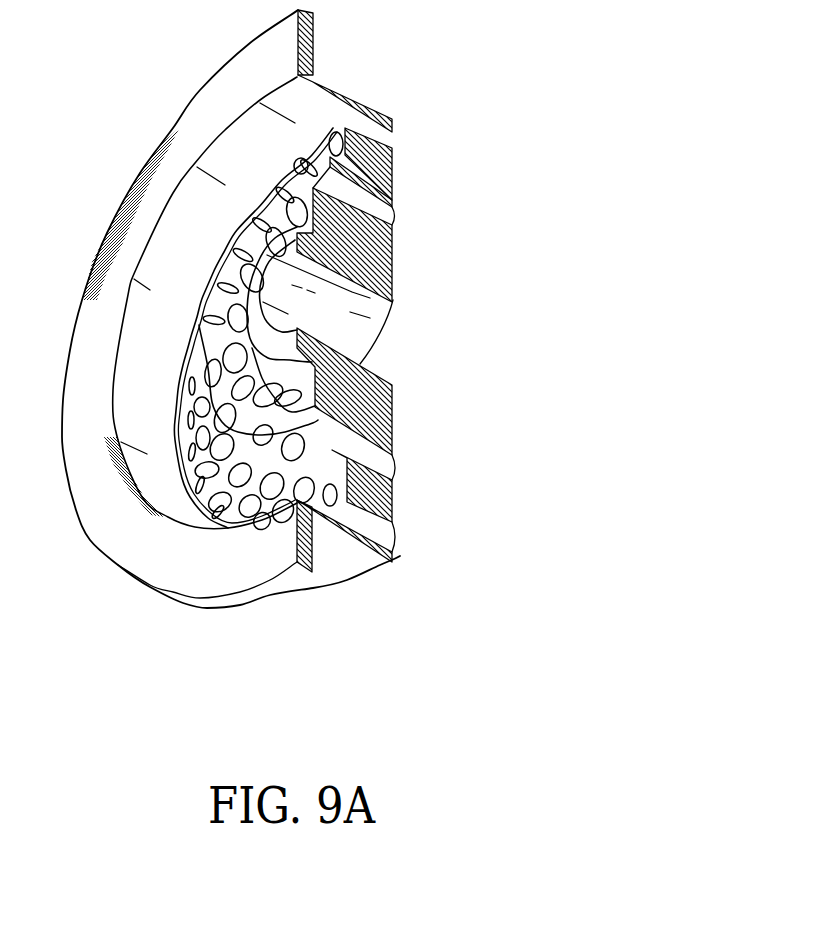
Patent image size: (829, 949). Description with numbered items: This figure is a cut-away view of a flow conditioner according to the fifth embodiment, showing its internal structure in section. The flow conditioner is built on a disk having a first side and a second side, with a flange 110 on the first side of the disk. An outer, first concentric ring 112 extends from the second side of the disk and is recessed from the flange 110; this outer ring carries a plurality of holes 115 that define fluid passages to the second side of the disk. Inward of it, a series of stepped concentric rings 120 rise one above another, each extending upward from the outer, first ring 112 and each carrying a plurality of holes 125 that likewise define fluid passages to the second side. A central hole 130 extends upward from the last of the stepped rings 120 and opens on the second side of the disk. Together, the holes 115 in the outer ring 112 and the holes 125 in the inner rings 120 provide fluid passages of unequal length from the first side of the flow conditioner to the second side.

The flange 110 is at (225, 600).
The outer, first concentric ring 112 is at (350, 100).
The holes 115 is at (384, 131).
The stepped concentric rings 120 is at (352, 495).
The holes 125 is at (375, 205).
The central hole 130 is at (380, 316).